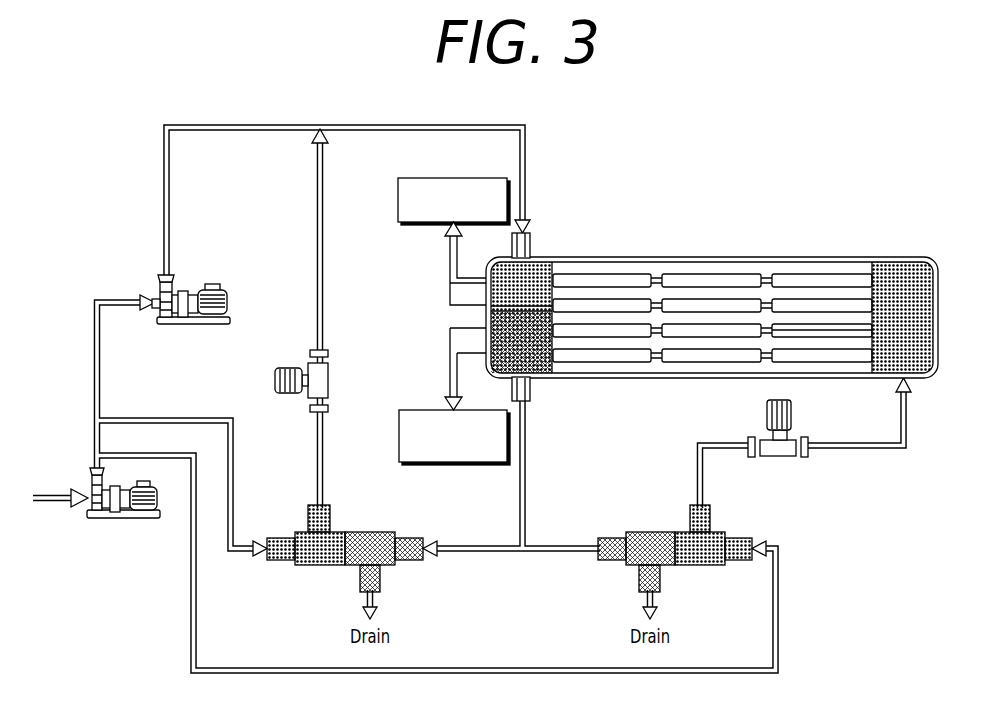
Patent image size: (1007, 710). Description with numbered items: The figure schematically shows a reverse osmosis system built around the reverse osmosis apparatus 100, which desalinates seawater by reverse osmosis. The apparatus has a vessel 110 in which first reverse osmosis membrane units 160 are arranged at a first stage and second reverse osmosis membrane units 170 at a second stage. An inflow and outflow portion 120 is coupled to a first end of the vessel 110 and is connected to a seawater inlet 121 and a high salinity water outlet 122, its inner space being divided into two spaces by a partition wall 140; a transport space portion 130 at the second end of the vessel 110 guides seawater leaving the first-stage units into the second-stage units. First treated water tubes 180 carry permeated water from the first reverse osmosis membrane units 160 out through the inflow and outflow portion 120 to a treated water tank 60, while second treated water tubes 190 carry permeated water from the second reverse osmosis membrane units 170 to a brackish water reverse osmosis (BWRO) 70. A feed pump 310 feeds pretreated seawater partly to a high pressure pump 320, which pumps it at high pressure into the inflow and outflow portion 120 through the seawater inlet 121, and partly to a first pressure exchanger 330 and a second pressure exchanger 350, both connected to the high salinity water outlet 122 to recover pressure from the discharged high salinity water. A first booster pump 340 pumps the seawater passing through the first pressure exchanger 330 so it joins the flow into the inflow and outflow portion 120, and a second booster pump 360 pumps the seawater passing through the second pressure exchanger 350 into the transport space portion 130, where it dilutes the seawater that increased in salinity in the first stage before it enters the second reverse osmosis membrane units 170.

The treated water tank 60 is at (398, 205).
The brackish water reverse osmosis (BWRO) 70 is at (399, 440).
The reverse osmosis apparatus 100 is at (678, 291).
The vessel 110 is at (757, 256).
The inflow and outflow portion 120 is at (509, 303).
The seawater inlet 121 is at (512, 244).
The high salinity water outlet 122 is at (512, 389).
The transport space portion 130 is at (904, 265).
The partition wall 140 is at (487, 310).
The first reverse osmosis membrane units 160 is at (603, 278).
The second reverse osmosis membrane units 170 is at (826, 331).
The first treated water tubes 180 is at (450, 270).
The second treated water tubes 190 is at (450, 376).
The feed pump 310 is at (125, 520).
The high pressure pump 320 is at (193, 326).
The first pressure exchanger 330 is at (318, 567).
The first booster pump 340 is at (272, 382).
The second pressure exchanger 350 is at (700, 567).
The second booster pump 360 is at (765, 412).